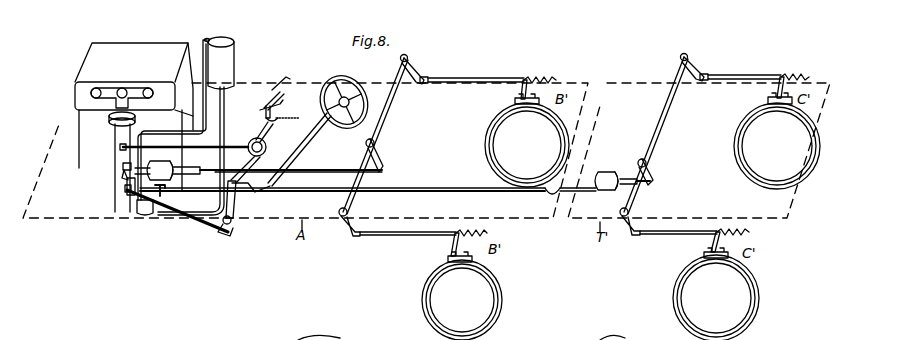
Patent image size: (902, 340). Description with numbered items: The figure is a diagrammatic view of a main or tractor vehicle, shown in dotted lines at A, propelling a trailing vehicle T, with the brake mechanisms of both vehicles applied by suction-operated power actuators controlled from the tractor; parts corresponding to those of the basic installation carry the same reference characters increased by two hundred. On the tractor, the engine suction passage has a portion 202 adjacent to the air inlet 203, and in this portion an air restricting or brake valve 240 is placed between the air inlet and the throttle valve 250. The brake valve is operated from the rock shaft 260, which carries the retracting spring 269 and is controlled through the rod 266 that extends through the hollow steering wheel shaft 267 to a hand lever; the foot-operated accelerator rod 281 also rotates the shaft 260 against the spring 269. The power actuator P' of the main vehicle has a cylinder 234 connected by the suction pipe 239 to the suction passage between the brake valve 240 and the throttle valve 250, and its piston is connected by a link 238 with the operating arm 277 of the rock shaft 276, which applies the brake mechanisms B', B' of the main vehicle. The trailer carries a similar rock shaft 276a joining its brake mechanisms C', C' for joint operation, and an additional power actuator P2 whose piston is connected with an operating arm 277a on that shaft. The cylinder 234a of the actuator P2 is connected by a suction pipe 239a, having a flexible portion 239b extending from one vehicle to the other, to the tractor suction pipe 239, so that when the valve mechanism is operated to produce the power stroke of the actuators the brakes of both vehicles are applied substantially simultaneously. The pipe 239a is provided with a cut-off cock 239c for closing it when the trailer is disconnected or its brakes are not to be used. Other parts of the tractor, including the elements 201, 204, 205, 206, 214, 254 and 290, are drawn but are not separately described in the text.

The fuel tank 201 is at (80, 93).
The portion of the suction passage 202 is at (115, 160).
The air inlet 203 is at (130, 193).
The cup 204 is at (146, 205).
The pipe 205 is at (224, 118).
The reservoir cylinder 206 is at (234, 70).
The pipe 214 is at (203, 40).
The cylinder 234 is at (124, 166).
The cylinder 234a is at (604, 192).
The link 238 is at (332, 171).
The suction pipe 239 is at (128, 192).
The suction pipe 239a is at (342, 197).
The flexible portion 239b is at (548, 199).
The cut off cock 239c is at (164, 190).
The air restricting valve 240 is at (127, 185).
The throttle valve 250 is at (123, 147).
The joint 254 is at (266, 147).
The shaft 260 is at (268, 104).
The rod 266 is at (250, 192).
The hollow steering wheel shaft 267 is at (310, 138).
The spring 269 is at (284, 130).
The rock shaft 276 is at (382, 120).
The rock shaft 276a is at (652, 126).
The operating arm 277 is at (384, 164).
The operating arm 277a is at (652, 170).
The accelerator rod 281 is at (288, 85).
The steering wheel 290 is at (338, 82).
The power actuator P' is at (258, 166).
The power actuator P2 is at (606, 170).